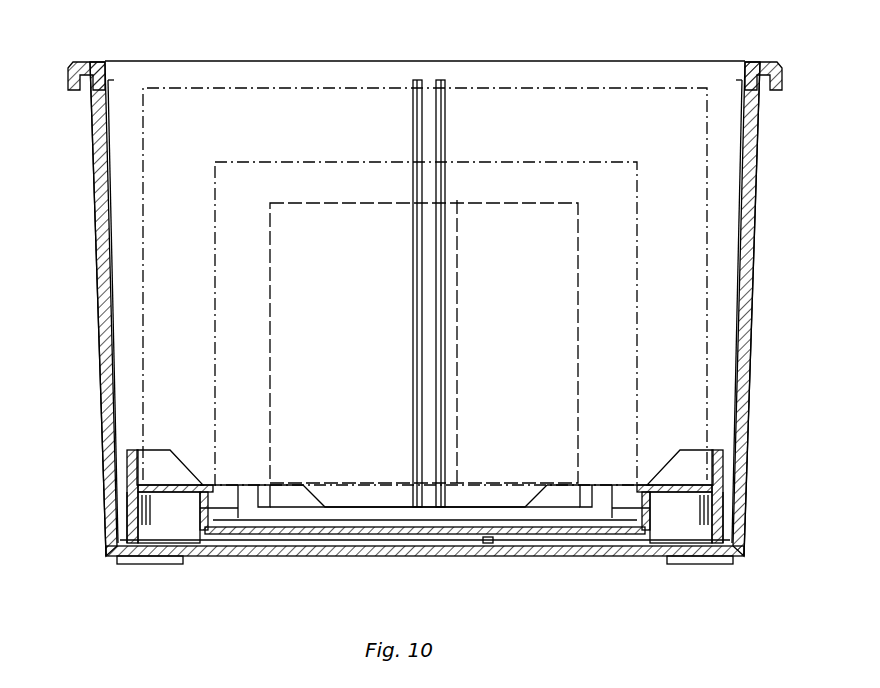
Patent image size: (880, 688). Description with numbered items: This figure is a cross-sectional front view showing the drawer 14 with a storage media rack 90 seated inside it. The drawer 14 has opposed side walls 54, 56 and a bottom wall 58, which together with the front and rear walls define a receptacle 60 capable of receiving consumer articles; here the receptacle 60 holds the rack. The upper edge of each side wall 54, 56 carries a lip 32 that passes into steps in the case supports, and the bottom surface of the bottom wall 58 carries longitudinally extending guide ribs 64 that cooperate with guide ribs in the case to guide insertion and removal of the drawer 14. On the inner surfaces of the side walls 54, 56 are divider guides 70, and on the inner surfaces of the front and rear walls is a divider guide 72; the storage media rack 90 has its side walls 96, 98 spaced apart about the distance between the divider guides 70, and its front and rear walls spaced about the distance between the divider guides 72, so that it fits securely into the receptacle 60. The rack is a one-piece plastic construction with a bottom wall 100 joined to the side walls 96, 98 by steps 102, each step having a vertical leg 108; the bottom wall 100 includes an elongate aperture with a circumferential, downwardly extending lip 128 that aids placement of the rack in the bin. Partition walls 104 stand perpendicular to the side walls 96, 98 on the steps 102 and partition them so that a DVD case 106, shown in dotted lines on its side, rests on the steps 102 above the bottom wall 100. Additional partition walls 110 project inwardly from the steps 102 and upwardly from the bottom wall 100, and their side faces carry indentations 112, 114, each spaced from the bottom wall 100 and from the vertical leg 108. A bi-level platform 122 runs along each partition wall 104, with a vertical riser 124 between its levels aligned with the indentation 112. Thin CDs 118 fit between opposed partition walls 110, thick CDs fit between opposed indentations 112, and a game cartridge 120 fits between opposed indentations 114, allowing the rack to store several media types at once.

The drawer 14 is at (757, 163).
The lips 32 is at (74, 64).
The side wall 54 is at (100, 280).
The side wall 56 is at (750, 280).
The bottom wall 58 is at (318, 552).
The receptacle 60 is at (278, 78).
The guide ribs 64 is at (117, 566).
The divider guides 70 is at (116, 312).
The divider guide 72 is at (419, 80).
The storage media rack 90 is at (727, 503).
The side wall 96 is at (103, 470).
The side wall 98 is at (727, 472).
The bottom wall 100 is at (548, 541).
The steps 102 is at (140, 468).
The partition walls 104 is at (160, 450).
The DVD case 106 is at (594, 90).
The vertical leg 108 is at (220, 515).
The partition walls 110 is at (224, 487).
The indentation 112 is at (246, 487).
The indentation 114 is at (278, 493).
The thin CD 118 is at (505, 160).
The game cartridge 120 is at (457, 200).
The bi-level platform 122 is at (365, 525).
The vertical riser 124 is at (275, 536).
The lip 128 is at (428, 552).